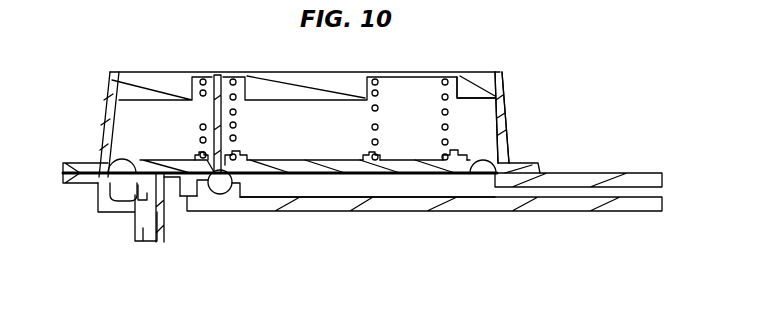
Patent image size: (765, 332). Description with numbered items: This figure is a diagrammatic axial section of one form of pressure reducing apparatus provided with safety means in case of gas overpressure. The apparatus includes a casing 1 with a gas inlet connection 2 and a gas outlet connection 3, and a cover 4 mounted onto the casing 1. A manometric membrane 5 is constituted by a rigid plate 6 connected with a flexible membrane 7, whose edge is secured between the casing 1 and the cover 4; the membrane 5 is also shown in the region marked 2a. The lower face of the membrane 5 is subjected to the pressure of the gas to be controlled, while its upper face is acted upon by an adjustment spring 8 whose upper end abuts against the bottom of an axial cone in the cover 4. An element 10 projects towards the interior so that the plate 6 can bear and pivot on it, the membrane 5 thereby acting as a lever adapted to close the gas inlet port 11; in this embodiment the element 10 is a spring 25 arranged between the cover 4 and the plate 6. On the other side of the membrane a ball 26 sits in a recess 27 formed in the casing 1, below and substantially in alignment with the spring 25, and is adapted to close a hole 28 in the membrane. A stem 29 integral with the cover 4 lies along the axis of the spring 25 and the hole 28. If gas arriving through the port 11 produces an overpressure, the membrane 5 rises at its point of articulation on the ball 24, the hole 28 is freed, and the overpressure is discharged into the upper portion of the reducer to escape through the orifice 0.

The casing 1 is at (472, 205).
The gas inlet connection 2 is at (143, 230).
The arm 2a is at (97, 202).
The gas outlet connection 3 is at (592, 178).
The cover 4 is at (330, 72).
The manometric membrane 5 is at (337, 185).
The rigid plate 6 is at (312, 160).
The flexible membrane 7 is at (420, 177).
The adjustment spring 8 is at (455, 100).
The element 10 is at (245, 118).
The gas inlet port 11 is at (240, 187).
The ball 24 is at (213, 0).
The spring 25 is at (203, 110).
The ball 26 is at (223, 193).
The recess 27 is at (224, 190).
The hole 28 is at (176, 196).
The stem 29 is at (237, 100).
The orifice 0 is at (458, 127).